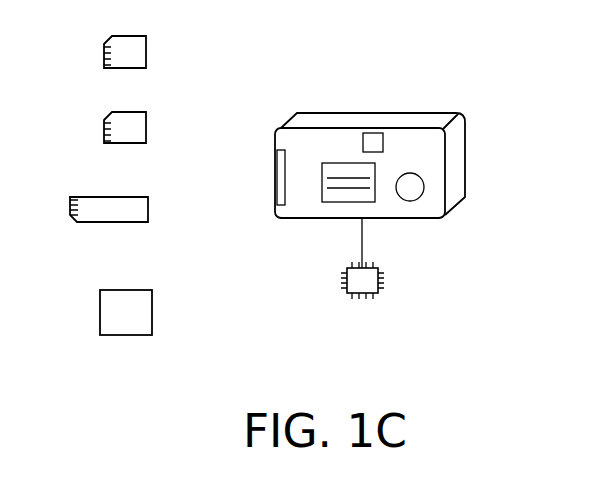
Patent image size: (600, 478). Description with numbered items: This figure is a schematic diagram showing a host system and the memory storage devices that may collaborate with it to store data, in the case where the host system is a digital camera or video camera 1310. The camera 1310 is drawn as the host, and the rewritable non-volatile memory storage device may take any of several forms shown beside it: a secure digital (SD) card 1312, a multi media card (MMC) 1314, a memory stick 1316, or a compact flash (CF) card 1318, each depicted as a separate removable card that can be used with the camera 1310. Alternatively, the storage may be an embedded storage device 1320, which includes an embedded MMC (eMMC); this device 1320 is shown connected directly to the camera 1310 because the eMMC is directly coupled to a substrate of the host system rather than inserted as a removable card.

The digital camera 1310 is at (468, 151).
The secure digital (SD) card 1312 is at (148, 44).
The multi media card (MMC) 1314 is at (148, 119).
The memory stick 1316 is at (149, 211).
The compact flash (CF) card 1318 is at (153, 305).
The embedded storage device 1320 is at (385, 283).